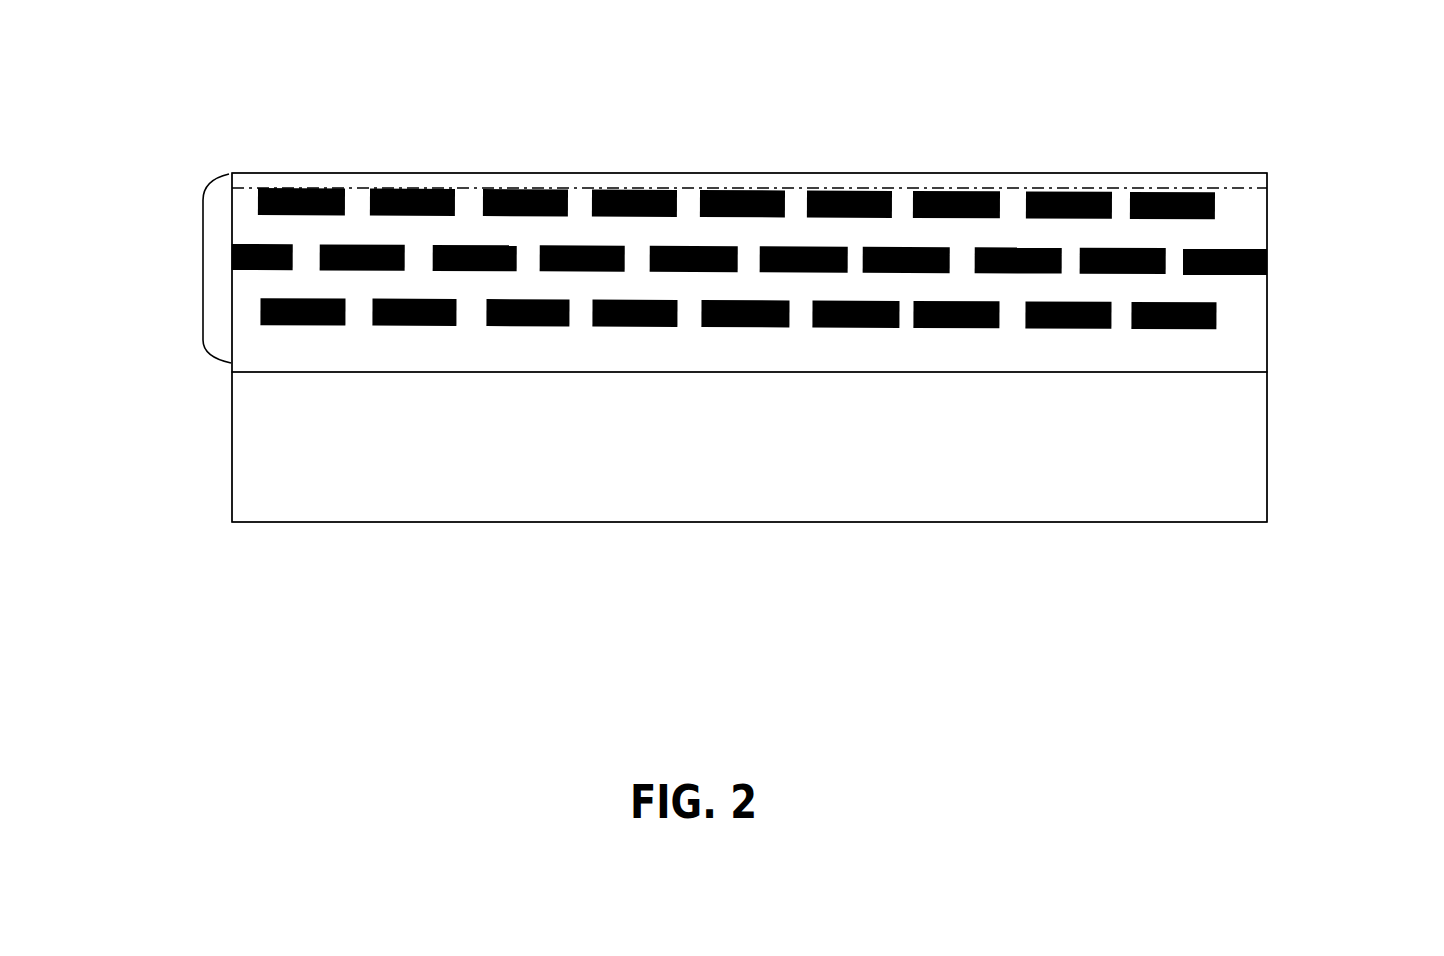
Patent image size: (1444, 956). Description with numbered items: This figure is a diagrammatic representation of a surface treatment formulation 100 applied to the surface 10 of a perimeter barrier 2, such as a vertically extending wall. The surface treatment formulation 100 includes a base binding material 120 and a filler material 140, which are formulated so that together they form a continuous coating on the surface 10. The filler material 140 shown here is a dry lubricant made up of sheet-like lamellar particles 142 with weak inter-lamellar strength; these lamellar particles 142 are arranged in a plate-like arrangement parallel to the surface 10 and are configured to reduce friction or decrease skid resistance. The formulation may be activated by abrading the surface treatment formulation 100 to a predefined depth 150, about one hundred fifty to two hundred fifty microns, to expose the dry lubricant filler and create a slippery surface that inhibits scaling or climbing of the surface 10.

The perimeter barrier 2 is at (231, 445).
The surface 10 is at (1267, 465).
The surface treatment formulation 100 is at (202, 253).
The base binding material 120 is at (1248, 335).
The filler material 140 is at (1253, 280).
The lamellar particles 142 is at (1235, 250).
The predefined depth 150 is at (788, 188).